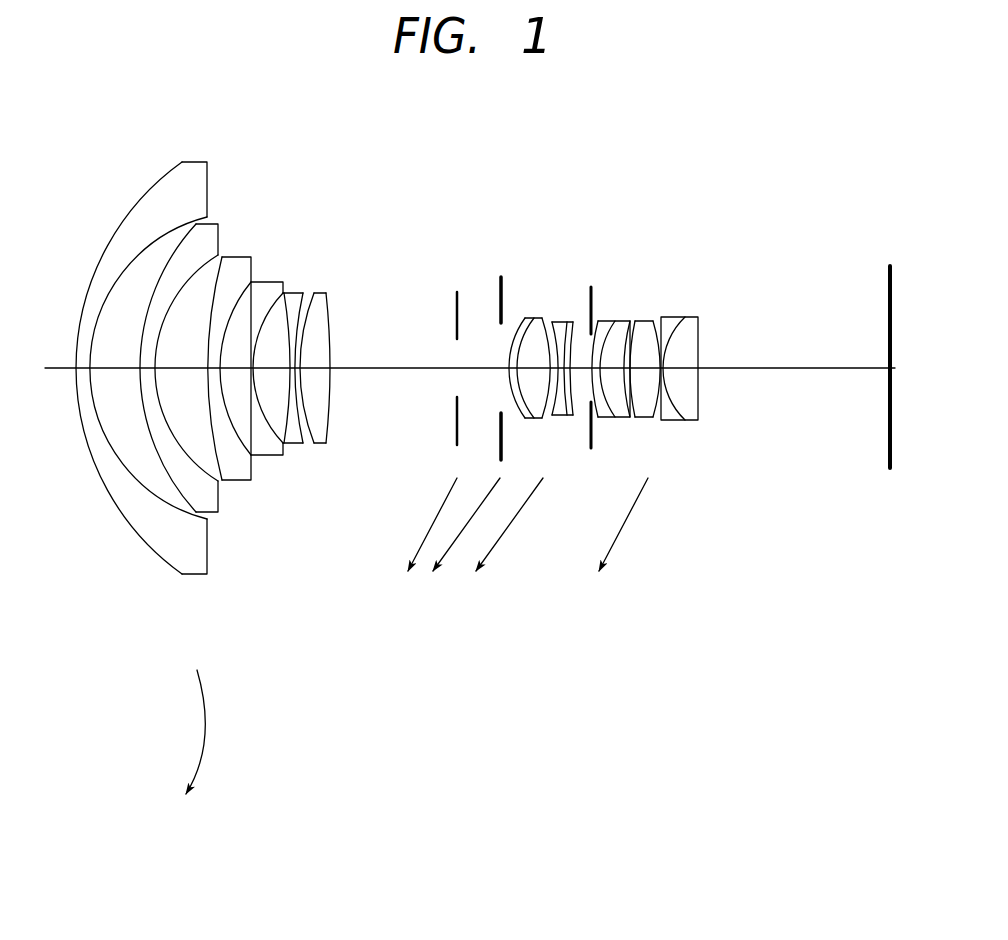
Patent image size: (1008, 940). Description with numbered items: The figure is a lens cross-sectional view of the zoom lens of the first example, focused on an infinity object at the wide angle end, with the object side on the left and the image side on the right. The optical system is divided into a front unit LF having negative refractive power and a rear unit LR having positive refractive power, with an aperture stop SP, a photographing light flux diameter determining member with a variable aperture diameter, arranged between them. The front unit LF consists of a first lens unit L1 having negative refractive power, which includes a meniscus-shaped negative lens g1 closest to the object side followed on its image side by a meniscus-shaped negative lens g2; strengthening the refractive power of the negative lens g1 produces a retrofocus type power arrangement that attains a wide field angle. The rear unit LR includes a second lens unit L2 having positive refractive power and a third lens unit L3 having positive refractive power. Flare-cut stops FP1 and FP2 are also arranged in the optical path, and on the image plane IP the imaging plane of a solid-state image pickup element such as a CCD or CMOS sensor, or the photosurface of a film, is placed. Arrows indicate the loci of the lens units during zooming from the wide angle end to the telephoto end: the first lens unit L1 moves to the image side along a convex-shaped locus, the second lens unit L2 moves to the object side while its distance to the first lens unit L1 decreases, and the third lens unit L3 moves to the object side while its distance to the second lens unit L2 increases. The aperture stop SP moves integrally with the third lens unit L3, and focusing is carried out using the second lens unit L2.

The first lens unit L1 is at (343, 584).
The front unit LF is at (198, 356).
The negative lens g1 is at (137, 230).
The negative lens g2 is at (198, 255).
The flare-cut stop FP1 is at (453, 302).
The aperture stop SP is at (497, 287).
The rear unit LR is at (705, 222).
The second lens unit L2 is at (577, 447).
The third lens unit L3 is at (703, 447).
The flare-cut stop FP2 is at (594, 286).
The image plane IP is at (887, 278).